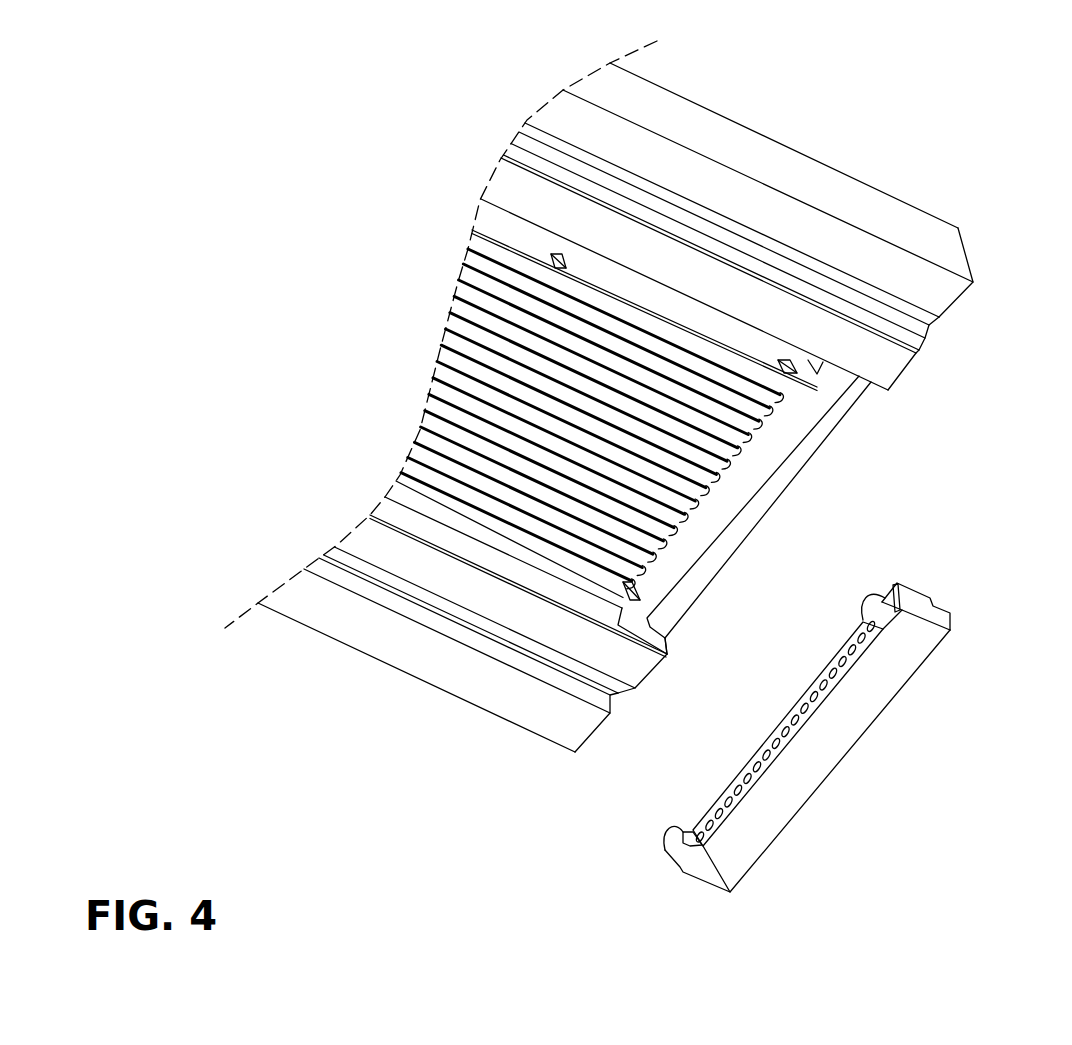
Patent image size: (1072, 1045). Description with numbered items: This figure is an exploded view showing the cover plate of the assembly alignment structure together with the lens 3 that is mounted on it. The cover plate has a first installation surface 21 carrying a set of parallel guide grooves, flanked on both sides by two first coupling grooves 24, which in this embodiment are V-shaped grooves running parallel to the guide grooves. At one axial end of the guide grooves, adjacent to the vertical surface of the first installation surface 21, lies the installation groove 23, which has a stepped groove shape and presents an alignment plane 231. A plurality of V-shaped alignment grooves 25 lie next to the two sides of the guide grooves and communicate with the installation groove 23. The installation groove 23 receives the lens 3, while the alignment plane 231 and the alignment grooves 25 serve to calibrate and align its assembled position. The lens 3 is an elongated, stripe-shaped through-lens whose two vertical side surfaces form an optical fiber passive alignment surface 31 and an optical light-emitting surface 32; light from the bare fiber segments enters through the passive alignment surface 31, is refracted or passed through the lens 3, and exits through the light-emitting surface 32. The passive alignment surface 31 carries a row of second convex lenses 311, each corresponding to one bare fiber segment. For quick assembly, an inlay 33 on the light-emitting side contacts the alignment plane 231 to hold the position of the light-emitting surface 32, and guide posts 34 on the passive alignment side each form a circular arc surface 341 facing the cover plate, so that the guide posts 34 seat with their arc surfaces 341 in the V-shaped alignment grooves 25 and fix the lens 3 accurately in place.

The first installation surface 21 is at (927, 275).
The installation groove 23 is at (775, 442).
The alignment plane 231 is at (843, 413).
The first coupling groove 24 is at (830, 275).
The alignment groove 25 is at (813, 362).
The lens 3 is at (817, 723).
The optical fiber passive alignment surface 31 is at (800, 778).
The second convex lens 311 is at (775, 753).
The optical light-emitting surface 32 is at (930, 657).
The inlay 33 is at (935, 602).
The guide post 34 is at (868, 600).
The circular arc surface 341 is at (893, 588).